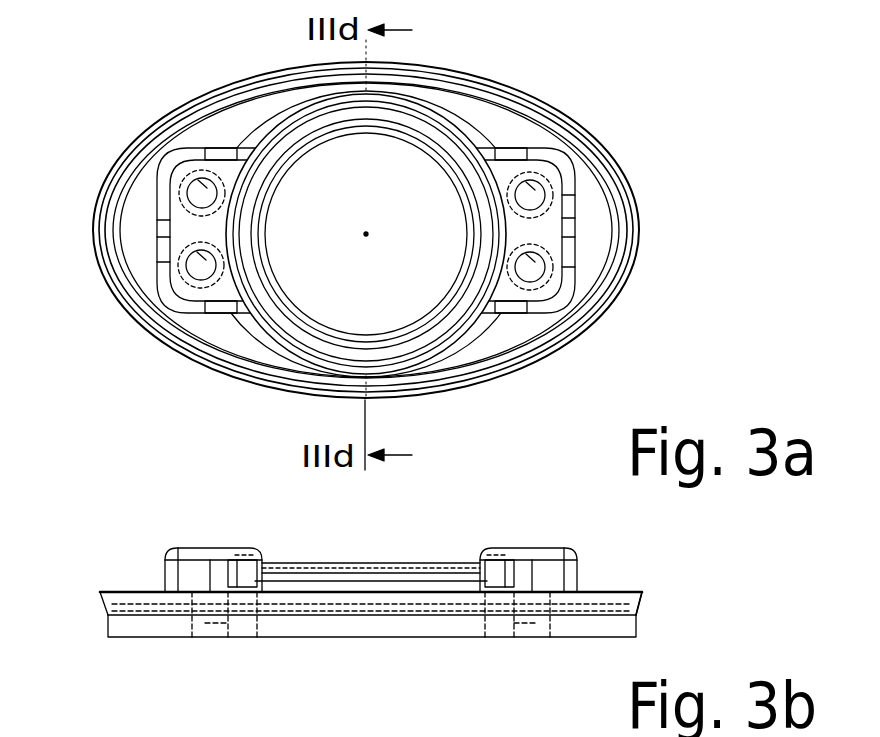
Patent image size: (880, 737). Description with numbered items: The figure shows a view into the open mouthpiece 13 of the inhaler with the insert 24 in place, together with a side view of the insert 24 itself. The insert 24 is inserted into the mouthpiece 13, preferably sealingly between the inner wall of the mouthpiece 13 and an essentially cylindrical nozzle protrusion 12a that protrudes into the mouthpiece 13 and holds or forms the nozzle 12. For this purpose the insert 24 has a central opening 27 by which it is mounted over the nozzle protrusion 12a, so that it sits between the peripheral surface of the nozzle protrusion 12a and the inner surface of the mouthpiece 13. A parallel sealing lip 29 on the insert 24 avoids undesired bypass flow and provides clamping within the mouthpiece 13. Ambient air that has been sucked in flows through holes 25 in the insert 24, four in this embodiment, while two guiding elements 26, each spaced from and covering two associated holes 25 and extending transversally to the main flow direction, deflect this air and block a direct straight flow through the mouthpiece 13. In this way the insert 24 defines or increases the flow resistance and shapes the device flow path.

In FIG. 3A, the nozzle 12 is at (366, 233).
In FIG. 3A, the nozzle protrusion 12a is at (455, 185).
In FIG. 3A, the mouthpiece 13 is at (593, 312).
In FIG. 3A, the insert 24 is at (493, 327).
In FIG. 3B, the insert 24 is at (288, 625).
In FIG. 3A, the hole 25 is at (117, 160).
In FIG. 3B, the hole 25 is at (200, 642).
In FIG. 3A, the guiding element 26 is at (157, 233).
In FIG. 3B, the guiding element 26 is at (190, 548).
In FIG. 3B, the central opening 27 is at (320, 562).
In FIG. 3B, the sealing lip 29 is at (647, 598).